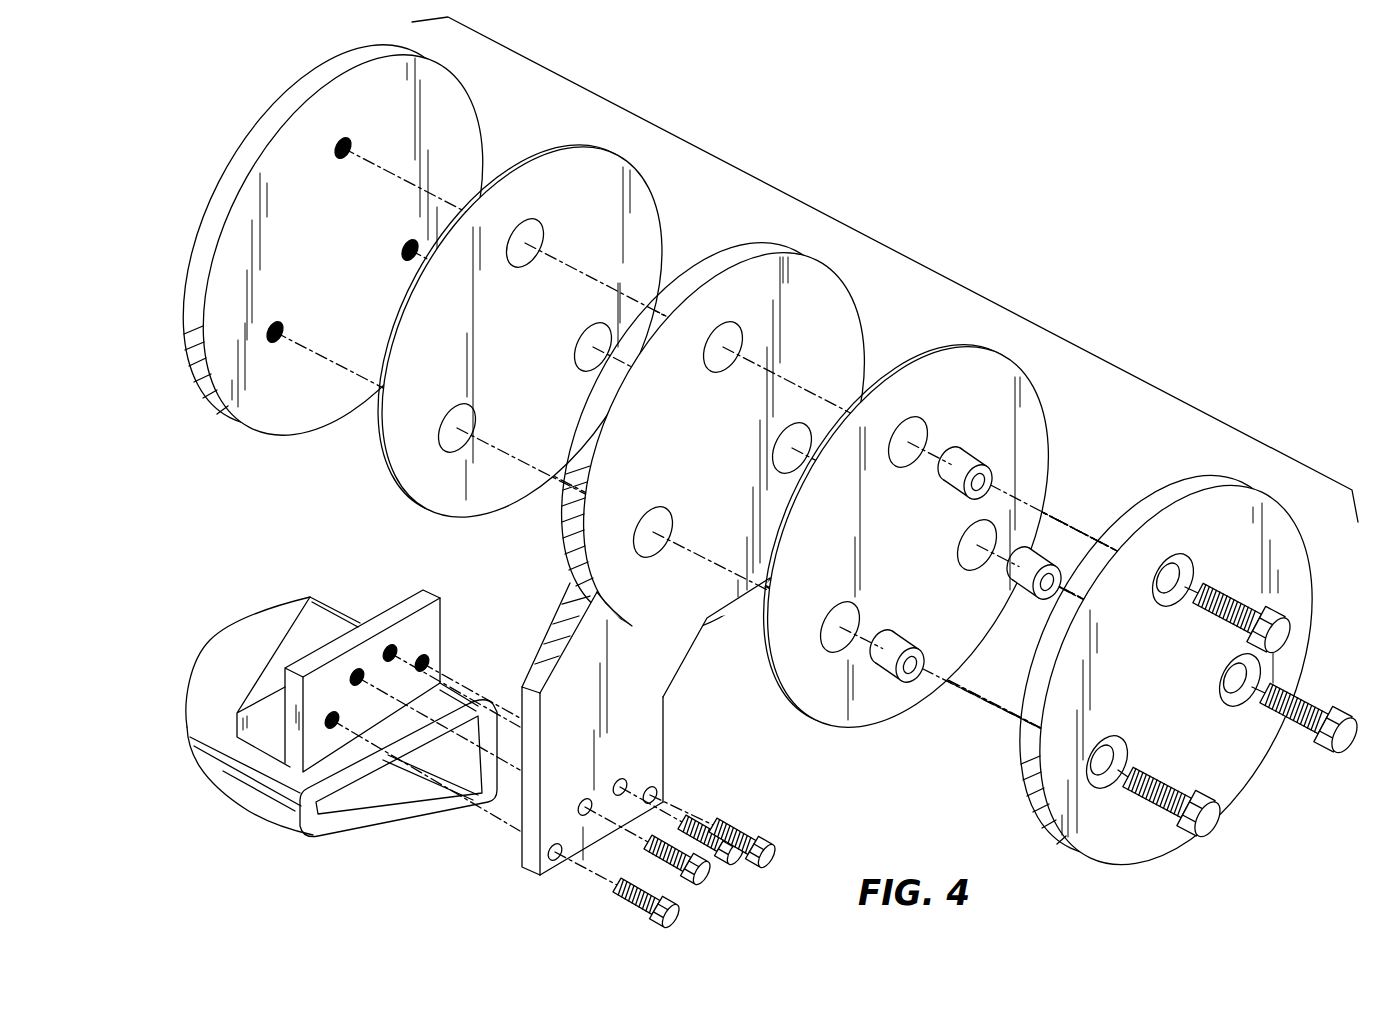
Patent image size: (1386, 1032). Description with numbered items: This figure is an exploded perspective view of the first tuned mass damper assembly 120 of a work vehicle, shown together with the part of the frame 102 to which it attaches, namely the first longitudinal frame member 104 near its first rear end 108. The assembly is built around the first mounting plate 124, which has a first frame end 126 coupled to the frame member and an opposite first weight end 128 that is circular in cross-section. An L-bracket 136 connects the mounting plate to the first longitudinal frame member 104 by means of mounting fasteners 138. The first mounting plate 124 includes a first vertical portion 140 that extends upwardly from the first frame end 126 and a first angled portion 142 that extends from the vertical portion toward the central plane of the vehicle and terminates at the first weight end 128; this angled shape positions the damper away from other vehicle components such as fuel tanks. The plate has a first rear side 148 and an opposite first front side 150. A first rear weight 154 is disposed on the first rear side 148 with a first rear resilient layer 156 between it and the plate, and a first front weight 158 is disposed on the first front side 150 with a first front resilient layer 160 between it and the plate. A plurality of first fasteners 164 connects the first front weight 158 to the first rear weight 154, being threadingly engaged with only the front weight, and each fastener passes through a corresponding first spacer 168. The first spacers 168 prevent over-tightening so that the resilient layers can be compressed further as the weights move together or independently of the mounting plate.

The frame 102 is at (294, 744).
The first longitudinal frame member 104 is at (294, 744).
The first rear end 108 is at (382, 796).
The first tuned mass damper assembly 120 is at (815, 210).
The first mounting plate 124 is at (973, 527).
The first frame end 126 is at (572, 872).
The first weight end 128 is at (800, 550).
The L-bracket 136 is at (268, 710).
The mounting fasteners 138 is at (770, 864).
The first vertical portion 140 is at (643, 760).
The first angled portion 142 is at (563, 600).
The first rear side 148 is at (635, 644).
The first front side 150 is at (543, 633).
The first rear weight 154 is at (1300, 575).
The first rear resilient layer 156 is at (1030, 432).
The first front weight 158 is at (217, 202).
The first front resilient layer 160 is at (554, 172).
The first fasteners 164 is at (1285, 650).
The first spacers 168 is at (1044, 564).